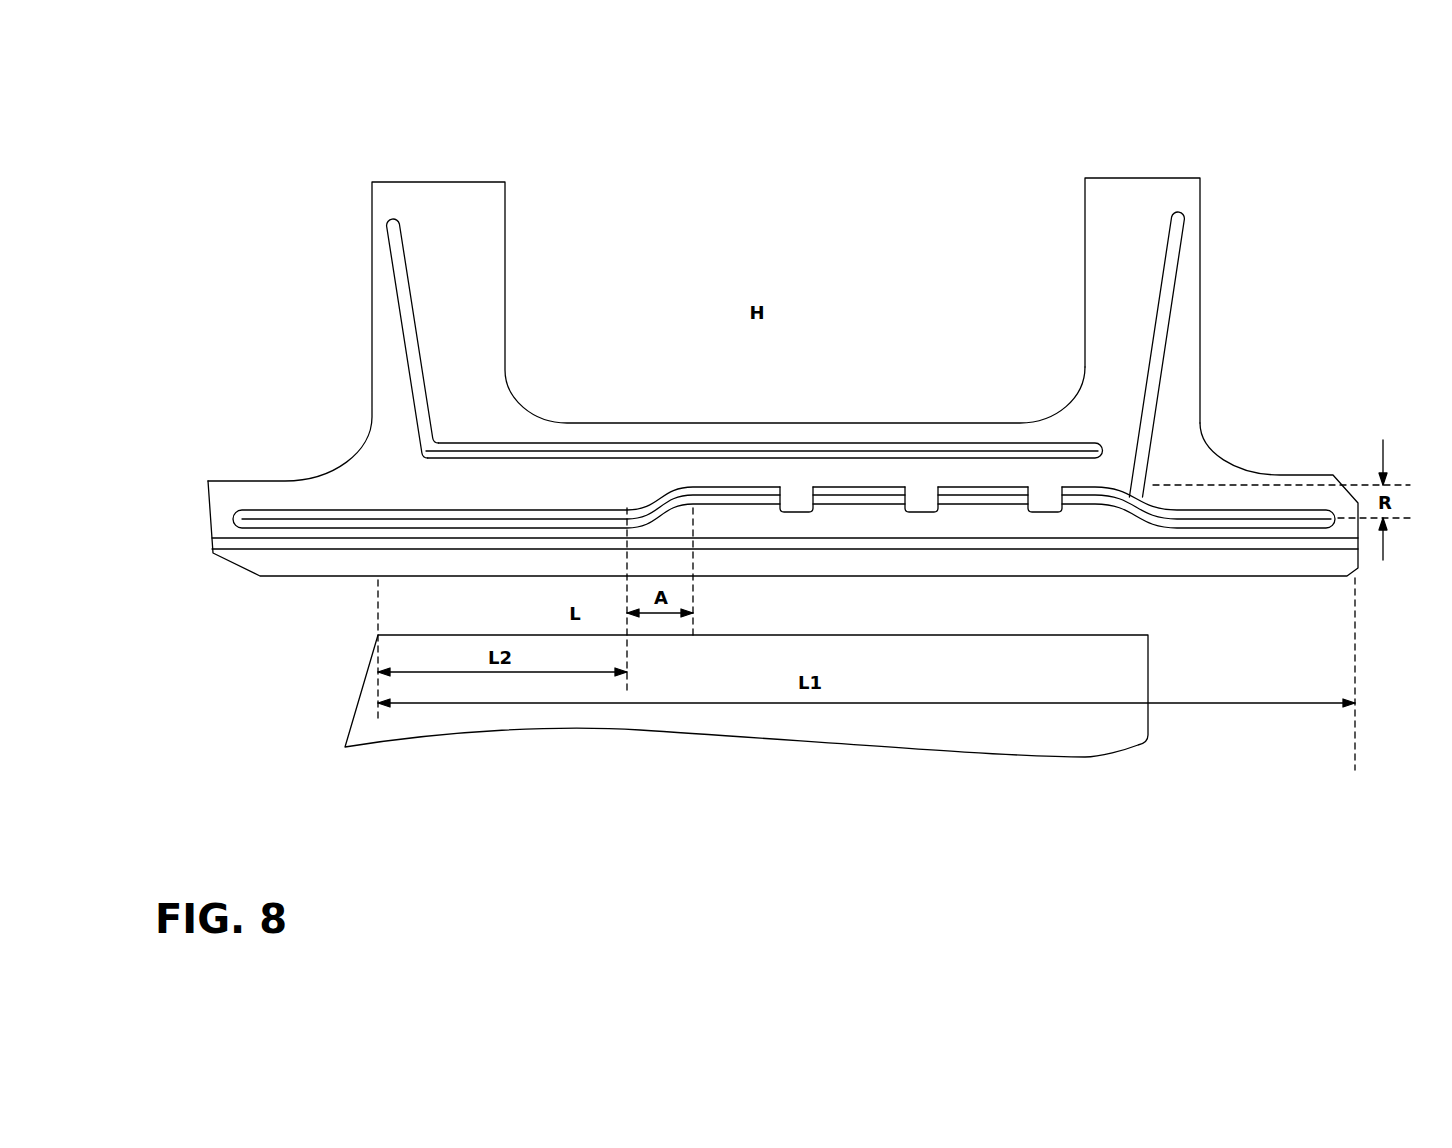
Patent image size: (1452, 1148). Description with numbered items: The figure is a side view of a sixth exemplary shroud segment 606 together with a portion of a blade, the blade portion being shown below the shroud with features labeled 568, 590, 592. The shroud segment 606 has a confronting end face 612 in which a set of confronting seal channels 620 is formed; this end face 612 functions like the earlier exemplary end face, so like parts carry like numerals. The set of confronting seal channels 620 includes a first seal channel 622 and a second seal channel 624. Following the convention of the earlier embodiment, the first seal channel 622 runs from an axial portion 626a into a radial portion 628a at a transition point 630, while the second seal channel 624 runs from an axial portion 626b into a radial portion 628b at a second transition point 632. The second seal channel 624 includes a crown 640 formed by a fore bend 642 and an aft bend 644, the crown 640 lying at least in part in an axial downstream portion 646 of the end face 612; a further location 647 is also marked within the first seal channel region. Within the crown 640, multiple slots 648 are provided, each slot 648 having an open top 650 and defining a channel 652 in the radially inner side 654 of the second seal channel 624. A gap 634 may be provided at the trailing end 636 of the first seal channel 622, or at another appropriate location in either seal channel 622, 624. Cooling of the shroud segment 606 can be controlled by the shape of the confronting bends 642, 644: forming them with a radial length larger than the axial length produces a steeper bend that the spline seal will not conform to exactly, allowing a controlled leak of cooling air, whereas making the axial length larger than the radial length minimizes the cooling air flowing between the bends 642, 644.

The shroud segment 606 is at (443, 160).
The confronting end face 612 is at (1143, 210).
The set of confronting seal channels 620 is at (383, 453).
The first seal channel 622 is at (668, 452).
The second seal channel 624 is at (403, 525).
The axial portion 626a is at (550, 450).
The axial portion 626b is at (300, 518).
The radial portion 628a is at (392, 280).
The radial portion 628b is at (1163, 327).
The transition point 630 is at (445, 432).
The second transition point 632 is at (1165, 452).
The gap 634 is at (1120, 407).
The trailing end 636 is at (1100, 447).
The crown 640 is at (848, 498).
The fore bend 642 is at (665, 492).
The aft bend 644 is at (1157, 513).
The axial downstream portion 646 is at (968, 332).
The recess 647 is at (590, 303).
The slot 648 is at (921, 508).
The open top 650 is at (798, 497).
The channel 652 is at (795, 510).
The radially inner side 654 is at (553, 528).
The plate bottom edge 568 is at (1090, 712).
The plate end 590 is at (355, 708).
The plate 592 is at (1148, 653).